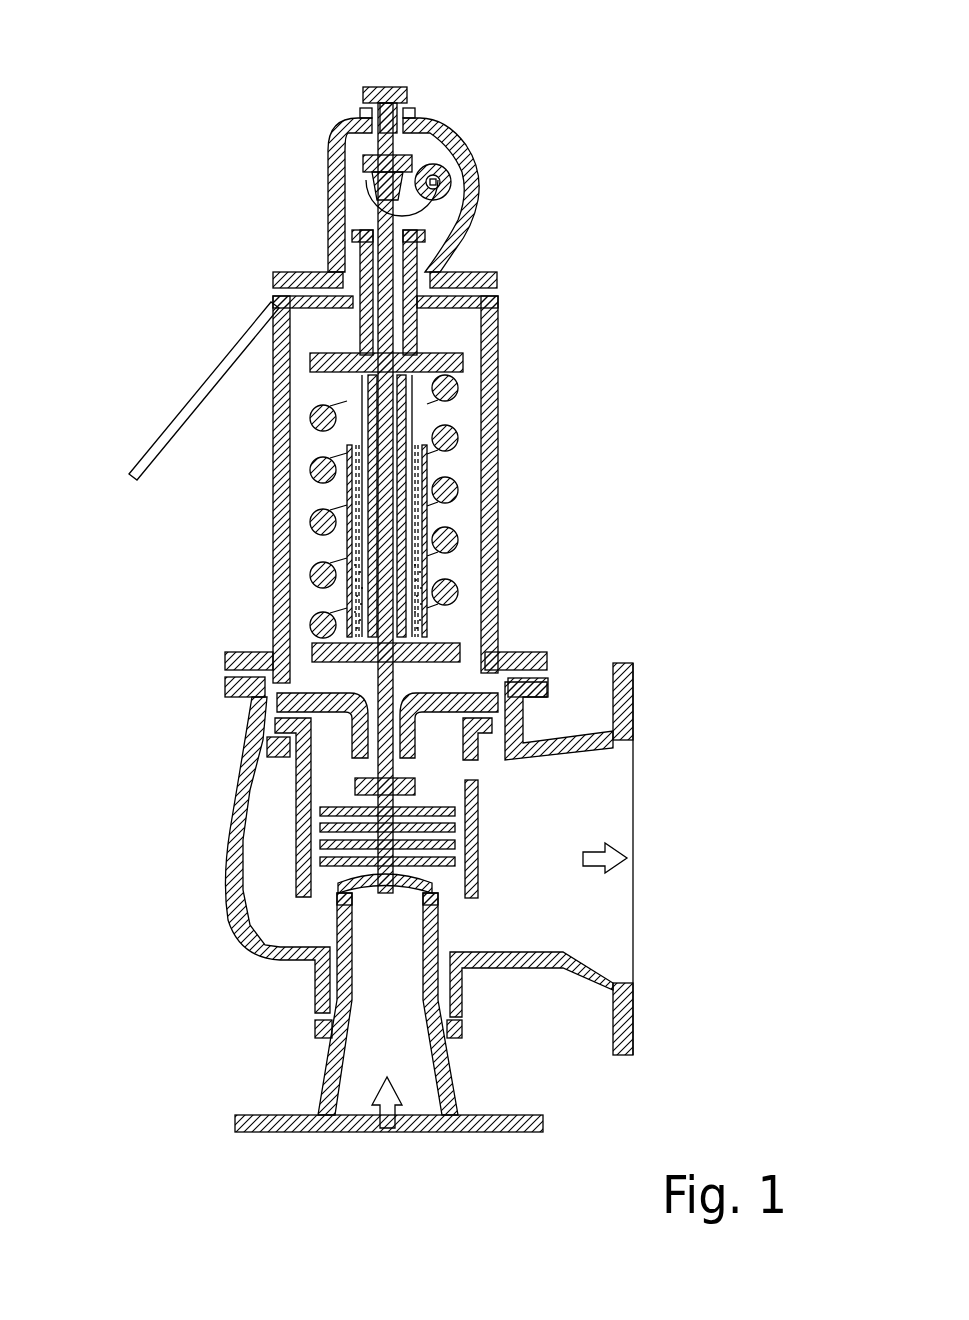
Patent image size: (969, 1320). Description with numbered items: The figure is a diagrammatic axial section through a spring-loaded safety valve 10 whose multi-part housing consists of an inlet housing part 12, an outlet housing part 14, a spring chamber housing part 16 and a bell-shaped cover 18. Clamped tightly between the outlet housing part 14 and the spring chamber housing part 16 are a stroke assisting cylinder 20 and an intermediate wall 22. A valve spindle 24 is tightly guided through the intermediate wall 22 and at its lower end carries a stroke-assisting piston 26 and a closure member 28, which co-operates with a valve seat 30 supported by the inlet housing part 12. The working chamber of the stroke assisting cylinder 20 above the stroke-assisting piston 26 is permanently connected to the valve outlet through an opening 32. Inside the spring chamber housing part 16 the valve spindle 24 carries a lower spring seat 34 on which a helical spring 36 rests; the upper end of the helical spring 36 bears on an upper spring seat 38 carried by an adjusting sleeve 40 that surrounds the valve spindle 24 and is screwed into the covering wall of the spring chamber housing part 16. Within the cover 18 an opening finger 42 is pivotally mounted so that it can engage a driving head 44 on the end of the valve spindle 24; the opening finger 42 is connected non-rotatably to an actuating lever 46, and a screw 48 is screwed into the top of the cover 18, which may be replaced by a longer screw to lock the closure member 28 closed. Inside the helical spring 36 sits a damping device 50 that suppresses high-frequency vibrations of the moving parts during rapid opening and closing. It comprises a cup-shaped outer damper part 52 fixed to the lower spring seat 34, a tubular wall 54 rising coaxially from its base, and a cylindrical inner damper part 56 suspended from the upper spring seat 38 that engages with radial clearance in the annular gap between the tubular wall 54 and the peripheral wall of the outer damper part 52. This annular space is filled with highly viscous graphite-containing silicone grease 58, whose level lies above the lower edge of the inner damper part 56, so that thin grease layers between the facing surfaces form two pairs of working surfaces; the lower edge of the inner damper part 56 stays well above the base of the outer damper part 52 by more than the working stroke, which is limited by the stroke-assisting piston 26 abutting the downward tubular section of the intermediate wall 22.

The safety valve 10 is at (570, 147).
The inlet housing part 12 is at (325, 1067).
The outlet housing part 14 is at (227, 887).
The spring chamber housing part 16 is at (273, 562).
The cover 18 is at (335, 195).
The stroke assisting cylinder 20 is at (300, 788).
The intermediate wall 22 is at (270, 703).
The valve spindle 24 is at (270, 655).
The stroke-assisting piston 26 is at (337, 833).
The closure member 28 is at (432, 880).
The valve seat 30 is at (425, 895).
The opening 32 is at (467, 778).
The spring seat 34 is at (450, 650).
The helical spring 36 is at (455, 388).
The spring seat 38 is at (460, 348).
The adjusting sleeve 40 is at (418, 267).
The opening finger 42 is at (462, 220).
The driving head 44 is at (392, 162).
The actuating lever 46 is at (237, 350).
The screw 48 is at (390, 87).
The damping device 50 is at (305, 442).
The outer damper part 52 is at (458, 622).
The tubular wall 54 is at (432, 462).
The inner damper part 56 is at (435, 413).
The silicone grease 58 is at (418, 568).